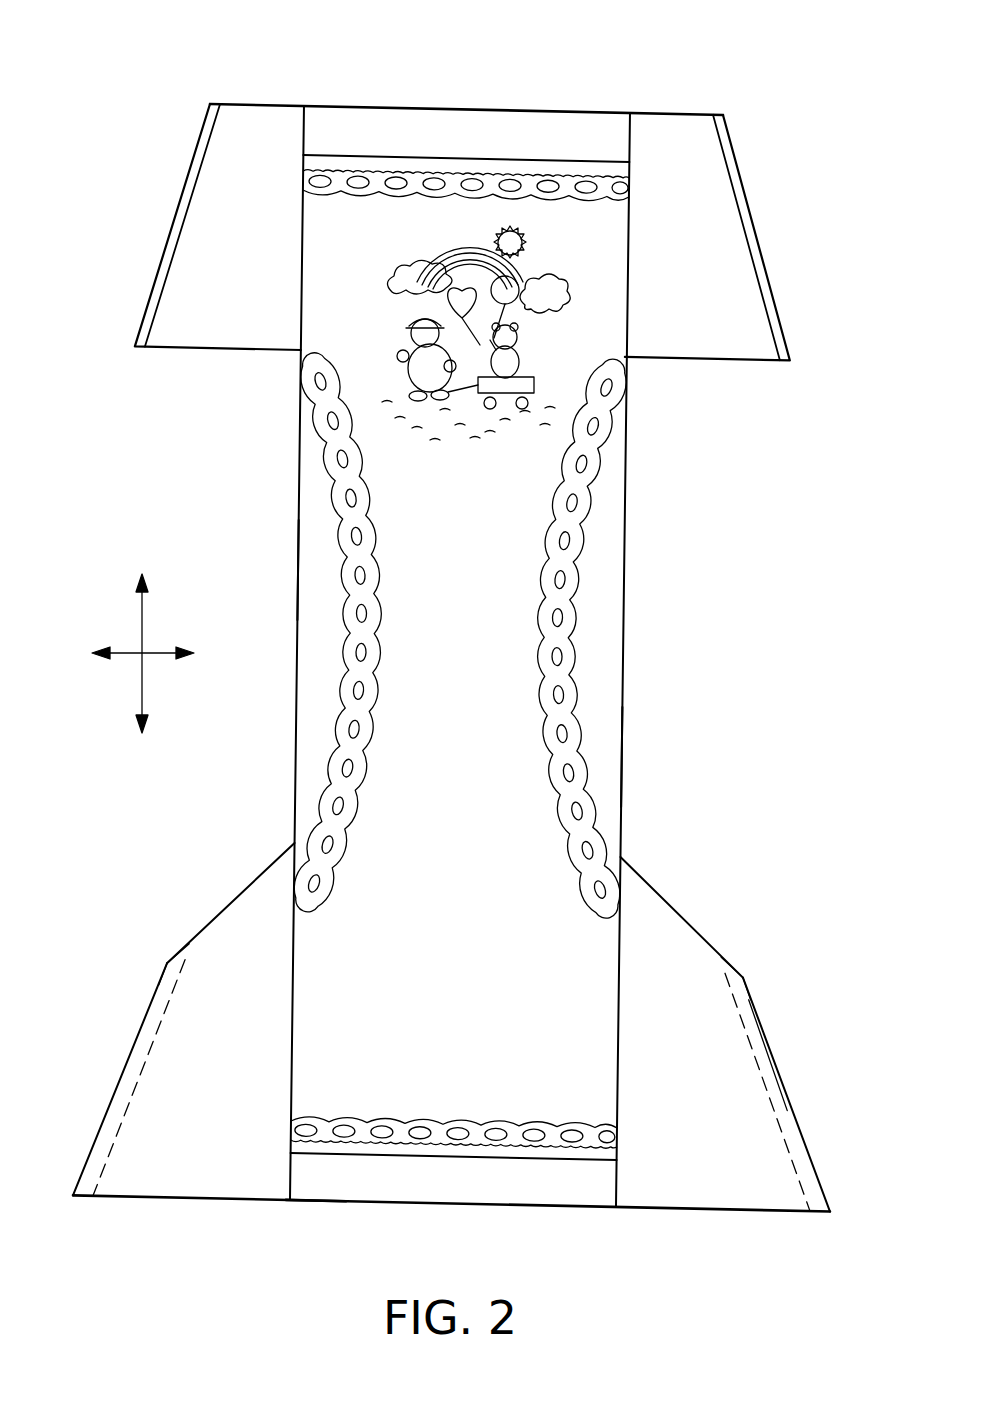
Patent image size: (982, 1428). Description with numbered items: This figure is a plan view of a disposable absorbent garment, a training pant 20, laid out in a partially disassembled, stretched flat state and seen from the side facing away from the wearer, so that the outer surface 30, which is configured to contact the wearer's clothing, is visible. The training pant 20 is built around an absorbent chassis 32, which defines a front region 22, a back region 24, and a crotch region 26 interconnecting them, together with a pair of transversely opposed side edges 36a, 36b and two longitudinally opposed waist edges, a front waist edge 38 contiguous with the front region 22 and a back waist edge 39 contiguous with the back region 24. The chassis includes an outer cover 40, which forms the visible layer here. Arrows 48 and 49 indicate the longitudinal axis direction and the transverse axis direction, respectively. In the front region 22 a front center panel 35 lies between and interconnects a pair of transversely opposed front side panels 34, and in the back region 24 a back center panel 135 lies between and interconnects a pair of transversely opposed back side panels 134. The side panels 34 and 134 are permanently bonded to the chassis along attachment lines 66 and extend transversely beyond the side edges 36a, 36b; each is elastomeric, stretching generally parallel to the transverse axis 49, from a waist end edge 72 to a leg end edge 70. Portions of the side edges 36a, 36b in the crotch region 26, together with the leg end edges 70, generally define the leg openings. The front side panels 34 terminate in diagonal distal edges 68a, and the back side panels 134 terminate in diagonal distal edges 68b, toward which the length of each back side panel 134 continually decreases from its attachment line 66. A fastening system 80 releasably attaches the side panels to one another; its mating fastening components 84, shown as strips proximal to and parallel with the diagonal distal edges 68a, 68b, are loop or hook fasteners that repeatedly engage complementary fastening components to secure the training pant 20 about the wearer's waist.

The training pant 20 is at (214, 85).
The front region 22 is at (820, 328).
The back region 24 is at (338, 1003).
The crotch region 26 is at (522, 559).
The outer surface 30 is at (612, 686).
The absorbent chassis 32 is at (552, 840).
The front side panels 34 is at (238, 204).
The front center panel 35 is at (488, 112).
The side edge 36a is at (298, 565).
The side edge 36b is at (625, 747).
The front waist edge 38 is at (415, 108).
The back waist edge 39 is at (323, 1202).
The outer cover 40 is at (348, 380).
The longitudinal axis direction arrow 48 is at (140, 618).
The transverse axis direction arrow 49 is at (122, 658).
The attachment lines 66 is at (300, 255).
The diagonal distal edge of front side panel 68a is at (157, 265).
The diagonal distal edge of back side panel 68b is at (105, 1130).
The leg end edge 70 is at (215, 347).
The waist end edge 72 is at (265, 104).
The fastening system 80 is at (780, 1076).
The mating fastening components 84 is at (160, 1040).
The back side panels 134 is at (213, 957).
The back center panel 135 is at (437, 1073).